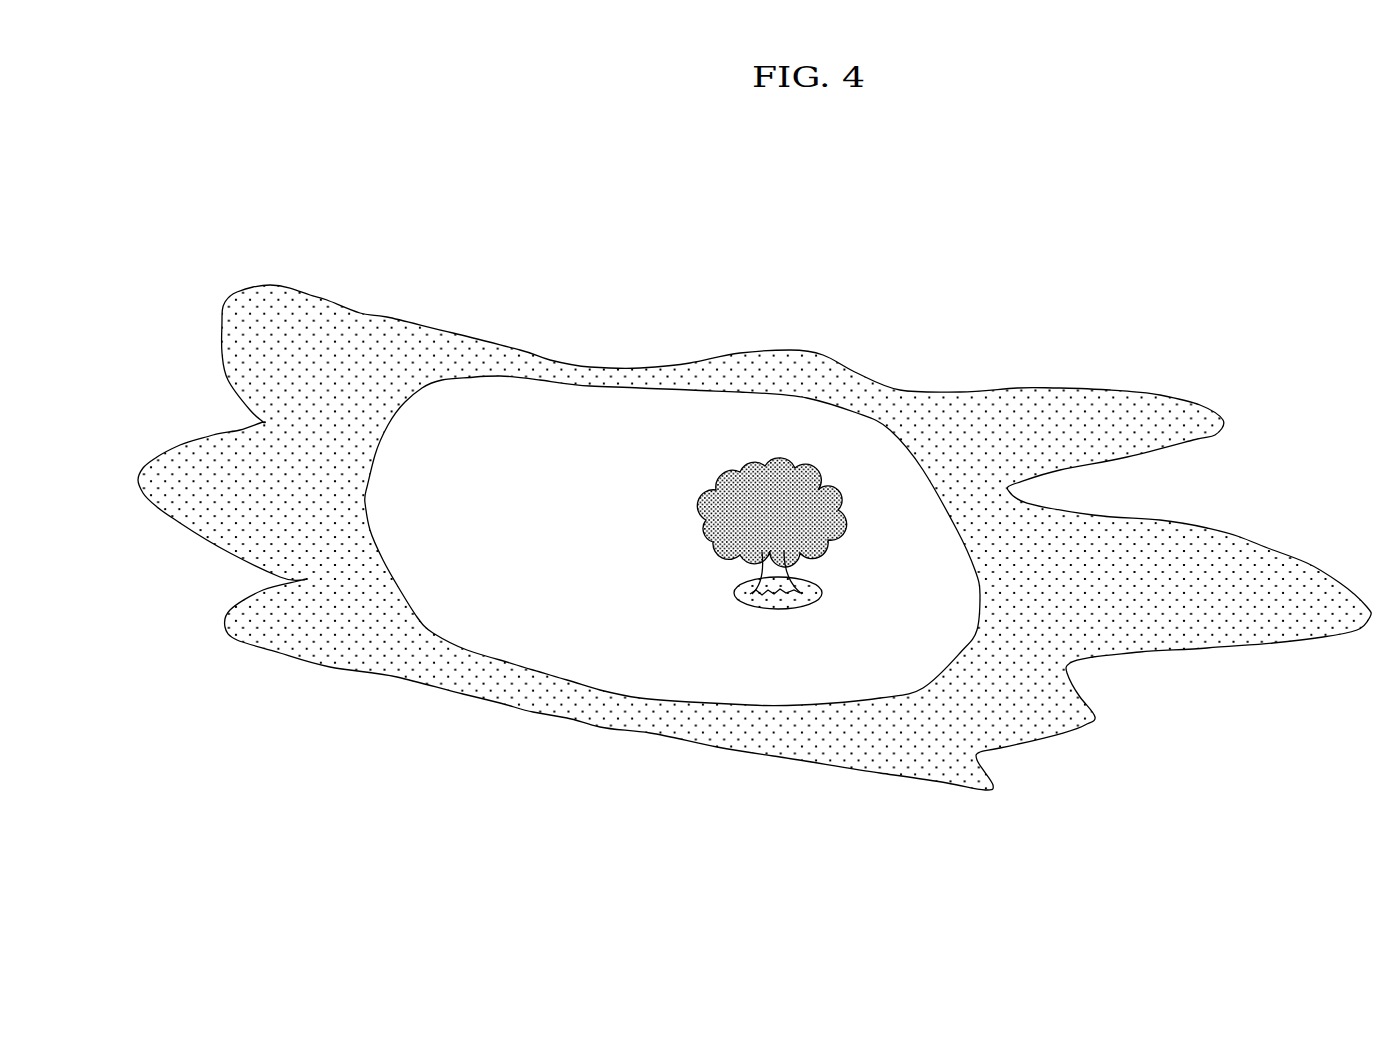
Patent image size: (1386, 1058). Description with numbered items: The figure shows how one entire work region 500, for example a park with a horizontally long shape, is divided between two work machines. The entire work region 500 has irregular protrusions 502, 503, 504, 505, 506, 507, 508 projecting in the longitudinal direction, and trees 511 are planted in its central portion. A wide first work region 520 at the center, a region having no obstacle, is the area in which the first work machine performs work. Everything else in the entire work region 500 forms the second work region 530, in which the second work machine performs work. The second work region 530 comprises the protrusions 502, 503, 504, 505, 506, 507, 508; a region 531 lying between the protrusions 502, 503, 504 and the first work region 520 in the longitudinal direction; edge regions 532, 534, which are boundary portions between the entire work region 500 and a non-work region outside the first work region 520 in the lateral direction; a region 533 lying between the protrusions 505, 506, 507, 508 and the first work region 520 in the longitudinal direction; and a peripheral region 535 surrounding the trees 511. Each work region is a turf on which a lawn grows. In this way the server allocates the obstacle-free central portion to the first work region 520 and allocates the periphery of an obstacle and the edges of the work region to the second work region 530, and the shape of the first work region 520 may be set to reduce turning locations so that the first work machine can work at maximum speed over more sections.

The entire work region 500 is at (1047, 294).
The protrusion 502 is at (298, 626).
The protrusion 503 is at (201, 483).
The protrusion 504 is at (255, 332).
The protrusion 505 is at (1137, 418).
The protrusion 506 is at (1245, 591).
The protrusion 507 is at (1067, 721).
The protrusion 508 is at (960, 784).
The tree 511 is at (800, 470).
The first work region 520 is at (635, 430).
The second work region 530 is at (307, 342).
The region between protrusions and first work region 531 is at (337, 500).
The edge region 532 is at (540, 362).
The region between protrusions and first work region 533 is at (1002, 558).
The edge region 534 is at (557, 695).
The peripheral region of trees 535 is at (755, 603).